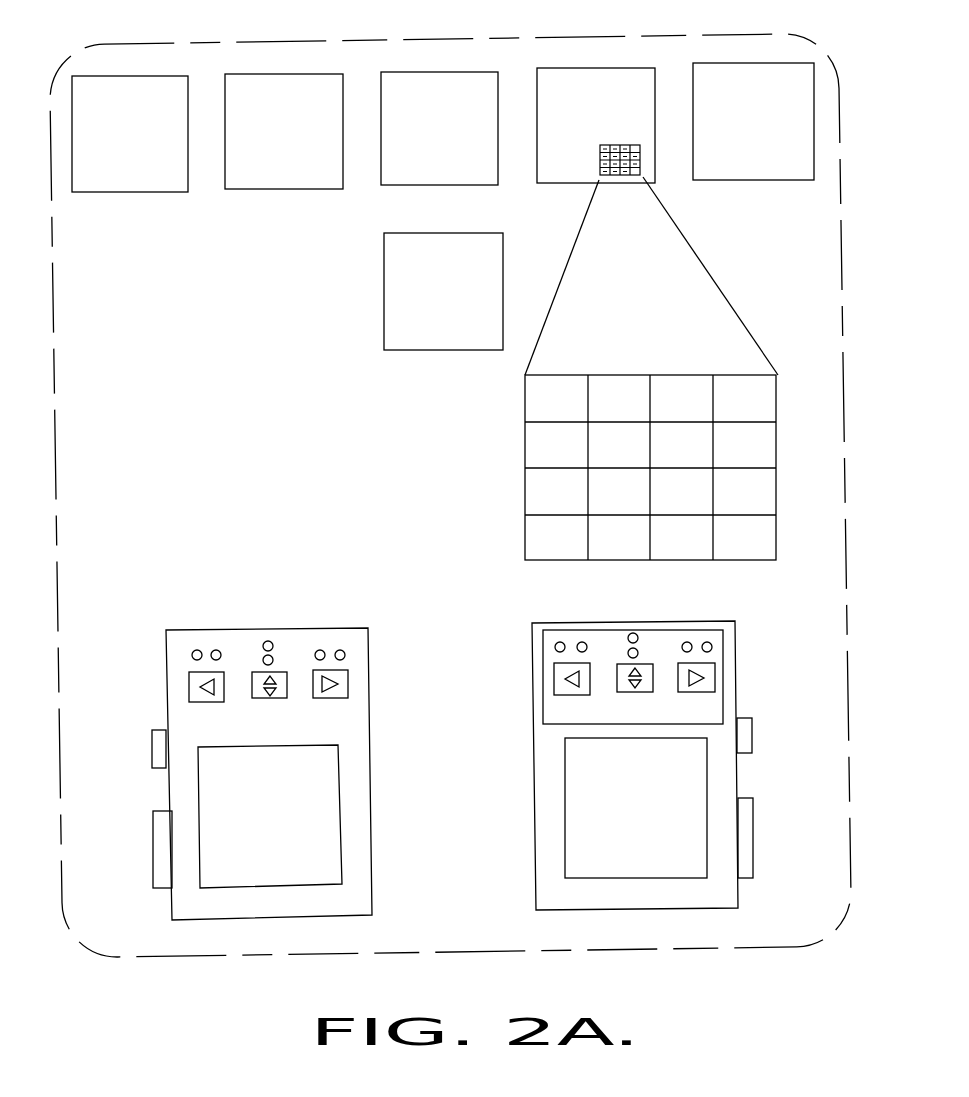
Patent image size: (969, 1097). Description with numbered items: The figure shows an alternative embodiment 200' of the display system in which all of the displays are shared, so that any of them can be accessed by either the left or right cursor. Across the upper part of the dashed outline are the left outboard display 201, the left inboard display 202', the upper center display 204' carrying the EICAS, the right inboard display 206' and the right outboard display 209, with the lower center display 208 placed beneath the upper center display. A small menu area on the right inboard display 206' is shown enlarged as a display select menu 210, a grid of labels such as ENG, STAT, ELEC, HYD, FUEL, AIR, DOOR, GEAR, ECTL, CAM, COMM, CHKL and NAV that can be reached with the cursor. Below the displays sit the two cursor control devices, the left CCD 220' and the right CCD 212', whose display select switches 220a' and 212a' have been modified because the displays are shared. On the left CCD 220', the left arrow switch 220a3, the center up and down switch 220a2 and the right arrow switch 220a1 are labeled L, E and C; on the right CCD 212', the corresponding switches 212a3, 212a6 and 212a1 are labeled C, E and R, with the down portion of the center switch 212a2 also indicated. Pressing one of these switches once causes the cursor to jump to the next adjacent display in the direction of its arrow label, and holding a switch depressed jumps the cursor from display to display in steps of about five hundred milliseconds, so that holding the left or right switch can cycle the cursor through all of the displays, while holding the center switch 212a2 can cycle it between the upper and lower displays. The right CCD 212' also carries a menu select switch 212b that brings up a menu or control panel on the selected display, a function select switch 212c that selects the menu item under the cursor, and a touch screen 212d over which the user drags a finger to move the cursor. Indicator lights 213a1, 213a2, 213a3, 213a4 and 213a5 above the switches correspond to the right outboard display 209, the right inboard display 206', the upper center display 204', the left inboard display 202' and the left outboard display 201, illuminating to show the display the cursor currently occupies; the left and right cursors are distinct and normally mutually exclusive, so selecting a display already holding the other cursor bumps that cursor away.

The alternative embodiment of the display system 200' is at (450, 480).
The left outboard display 201 is at (115, 192).
The left inboard display 202' is at (278, 160).
The upper center display 204' is at (415, 152).
The right inboard display 206' is at (637, 221).
The lower center display 208 is at (385, 315).
The right outboard display 209 is at (745, 182).
The display select menu 210 is at (525, 448).
The left cursor control device 220' is at (267, 744).
The right arrow display select switch 220a1 is at (348, 684).
The center display select switch 220a2 is at (260, 698).
The left arrow display select switch 220a3 is at (189, 686).
The display select switches of the left CCD 220a' is at (319, 716).
The right cursor control device 212' is at (651, 766).
The display select switches of the right CCD 212a' is at (683, 711).
The right arrow display select switch 212a1 is at (715, 685).
The center display select switch 212a2 is at (648, 690).
The left arrow display select switch 212a3 is at (557, 685).
The display select switch 212a6 is at (633, 658).
The menu select switch 212b is at (747, 732).
The function select switch 212c is at (740, 862).
The touch screen 212d is at (625, 878).
The indicator light 213a1 is at (712, 647).
The indicator light 213a2 is at (687, 641).
The indicator light 213a3 is at (633, 632).
The indicator light 213a4 is at (582, 641).
The indicator light 213a5 is at (560, 642).